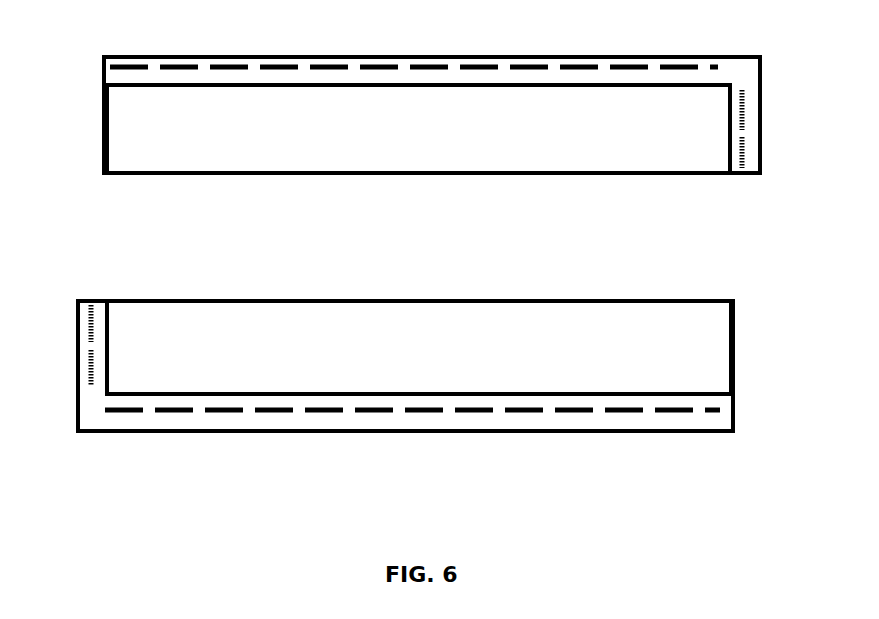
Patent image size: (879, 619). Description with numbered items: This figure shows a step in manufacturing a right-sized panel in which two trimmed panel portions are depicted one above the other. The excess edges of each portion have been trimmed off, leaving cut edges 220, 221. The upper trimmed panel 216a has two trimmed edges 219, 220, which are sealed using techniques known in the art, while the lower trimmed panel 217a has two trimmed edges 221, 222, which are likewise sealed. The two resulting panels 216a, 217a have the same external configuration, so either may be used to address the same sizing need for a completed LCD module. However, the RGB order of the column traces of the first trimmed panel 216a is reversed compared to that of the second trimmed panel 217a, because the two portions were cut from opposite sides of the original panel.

The upper trimmed panel 216a is at (415, 57).
The lower trimmed panel 217a is at (320, 432).
The trimmed edge 219 is at (622, 175).
The cut edge 220 is at (104, 118).
The cut edge 221 is at (367, 300).
The trimmed edge 222 is at (735, 328).